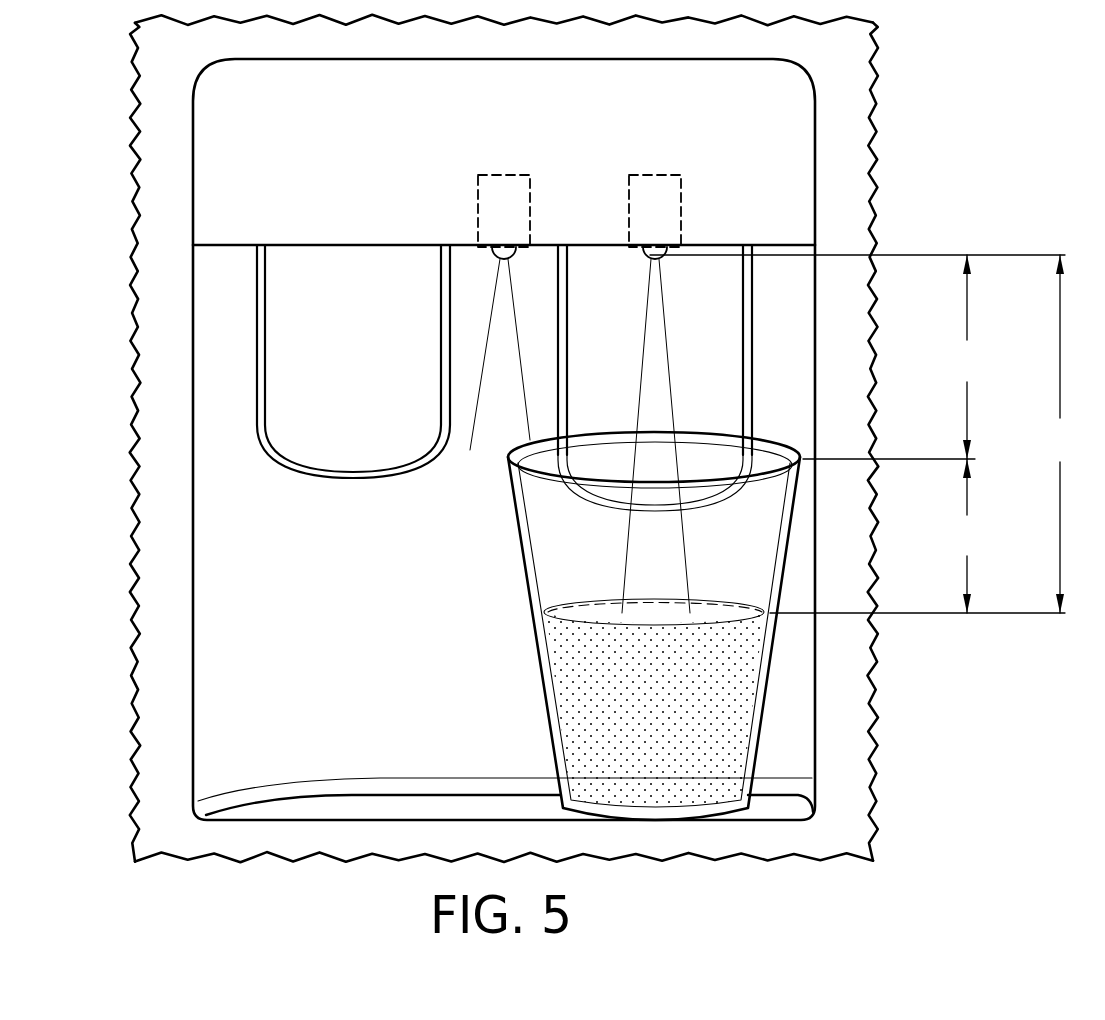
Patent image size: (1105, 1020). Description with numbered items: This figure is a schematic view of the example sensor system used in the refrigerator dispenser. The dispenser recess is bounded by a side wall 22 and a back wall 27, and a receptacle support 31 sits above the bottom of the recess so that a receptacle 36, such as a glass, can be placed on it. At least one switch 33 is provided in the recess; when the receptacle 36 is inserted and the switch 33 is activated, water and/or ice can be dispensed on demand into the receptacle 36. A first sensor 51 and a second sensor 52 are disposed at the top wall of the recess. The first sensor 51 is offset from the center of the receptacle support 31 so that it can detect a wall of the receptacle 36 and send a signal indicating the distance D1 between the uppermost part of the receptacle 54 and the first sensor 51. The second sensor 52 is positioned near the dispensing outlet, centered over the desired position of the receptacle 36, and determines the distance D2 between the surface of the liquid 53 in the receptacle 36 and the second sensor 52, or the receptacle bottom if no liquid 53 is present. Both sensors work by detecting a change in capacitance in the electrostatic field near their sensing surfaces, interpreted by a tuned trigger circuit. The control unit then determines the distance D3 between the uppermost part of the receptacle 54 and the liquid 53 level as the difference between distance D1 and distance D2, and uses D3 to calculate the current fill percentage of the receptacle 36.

The side wall 22 is at (208, 613).
The back wall 27 is at (490, 724).
The receptacle support 31 is at (373, 806).
The switch 33 is at (720, 352).
The receptacle 36 is at (520, 545).
The first sensor 51 is at (520, 175).
The second sensor 52 is at (672, 175).
The liquid 53 is at (703, 739).
The uppermost part of the receptacle 54 is at (625, 433).
The distance D1 is at (966, 357).
The distance D2 is at (1059, 434).
The distance D3 is at (966, 536).